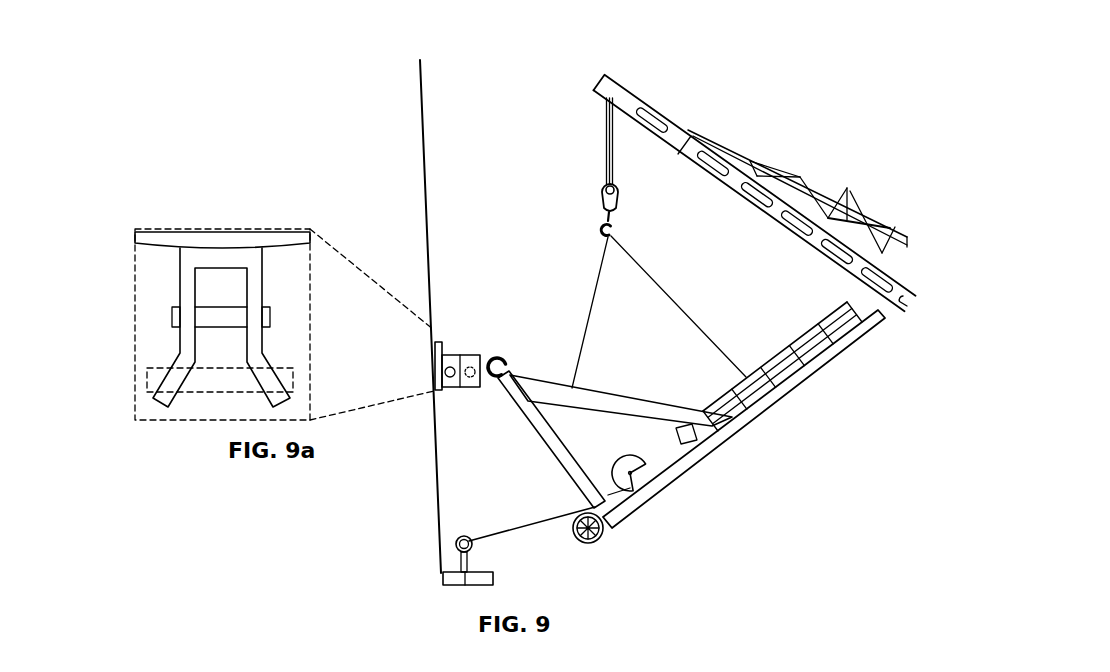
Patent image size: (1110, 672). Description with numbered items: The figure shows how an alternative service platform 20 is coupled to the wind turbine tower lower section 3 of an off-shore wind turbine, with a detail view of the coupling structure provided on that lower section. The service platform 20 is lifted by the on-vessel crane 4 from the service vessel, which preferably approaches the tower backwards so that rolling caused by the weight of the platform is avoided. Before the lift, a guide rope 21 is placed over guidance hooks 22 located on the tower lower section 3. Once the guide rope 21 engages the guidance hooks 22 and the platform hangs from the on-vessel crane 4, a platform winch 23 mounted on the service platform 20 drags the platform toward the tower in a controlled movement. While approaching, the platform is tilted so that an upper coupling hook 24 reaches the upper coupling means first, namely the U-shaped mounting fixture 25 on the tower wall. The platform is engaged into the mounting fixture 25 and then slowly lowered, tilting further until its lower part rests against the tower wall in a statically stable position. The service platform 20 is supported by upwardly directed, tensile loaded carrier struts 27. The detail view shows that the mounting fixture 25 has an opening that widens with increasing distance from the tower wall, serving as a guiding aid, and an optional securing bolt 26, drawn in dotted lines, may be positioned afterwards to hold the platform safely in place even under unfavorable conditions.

In FIG. 9a, the tower lower section 3 is at (243, 238).
In FIG. 9, the on-vessel crane 4 is at (617, 82).
In FIG. 9, the service platform 20 is at (880, 386).
In FIG. 9, the guide rope 21 is at (535, 527).
In FIG. 9, the guidance hooks 22 is at (456, 543).
In FIG. 9, the platform winch 23 is at (643, 460).
In FIG. 9, the upper coupling hook 24 is at (488, 352).
In FIG. 9, the U-shaped mounting fixture 25 is at (455, 389).
In FIG. 9a, the U-shaped mounting fixture 25 is at (187, 290).
In FIG. 9a, the securing bolt 26 is at (202, 382).
In FIG. 9, the carrier struts 27 is at (557, 385).